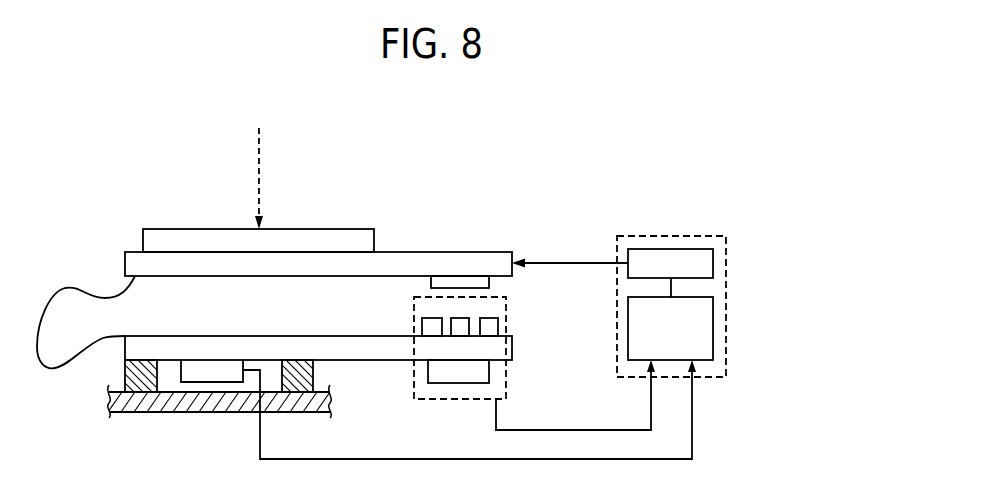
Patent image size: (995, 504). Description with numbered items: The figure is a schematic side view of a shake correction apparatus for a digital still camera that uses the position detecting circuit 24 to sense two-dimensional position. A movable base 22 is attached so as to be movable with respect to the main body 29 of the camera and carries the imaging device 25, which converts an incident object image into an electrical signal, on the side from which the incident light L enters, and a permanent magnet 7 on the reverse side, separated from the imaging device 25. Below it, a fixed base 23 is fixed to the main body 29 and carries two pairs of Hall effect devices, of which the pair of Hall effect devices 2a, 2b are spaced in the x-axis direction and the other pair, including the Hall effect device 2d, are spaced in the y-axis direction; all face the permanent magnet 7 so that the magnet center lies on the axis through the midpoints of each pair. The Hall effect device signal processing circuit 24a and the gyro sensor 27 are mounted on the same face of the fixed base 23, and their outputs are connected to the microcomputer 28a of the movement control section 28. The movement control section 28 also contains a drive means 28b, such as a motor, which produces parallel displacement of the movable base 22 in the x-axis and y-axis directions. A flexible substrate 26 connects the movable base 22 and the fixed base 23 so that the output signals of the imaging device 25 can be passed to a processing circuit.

The incident light L is at (247, 175).
The imaging device 25 is at (343, 229).
The movable base 22 is at (493, 258).
The permanent magnet 7 is at (449, 280).
The flexible substrate 26 is at (67, 287).
The fixed base 23 is at (493, 353).
The Hall effect device 2a is at (427, 328).
The Hall effect device 2d is at (462, 318).
The Hall effect device 2b is at (492, 326).
The position detecting circuit 24 is at (414, 378).
The Hall effect device signal processing circuit 24a is at (452, 377).
The gyro sensor 27 is at (209, 377).
The main body 29 is at (143, 413).
The movement control section 28 is at (630, 234).
The drive means 28b is at (678, 248).
The microcomputer 28a is at (713, 343).